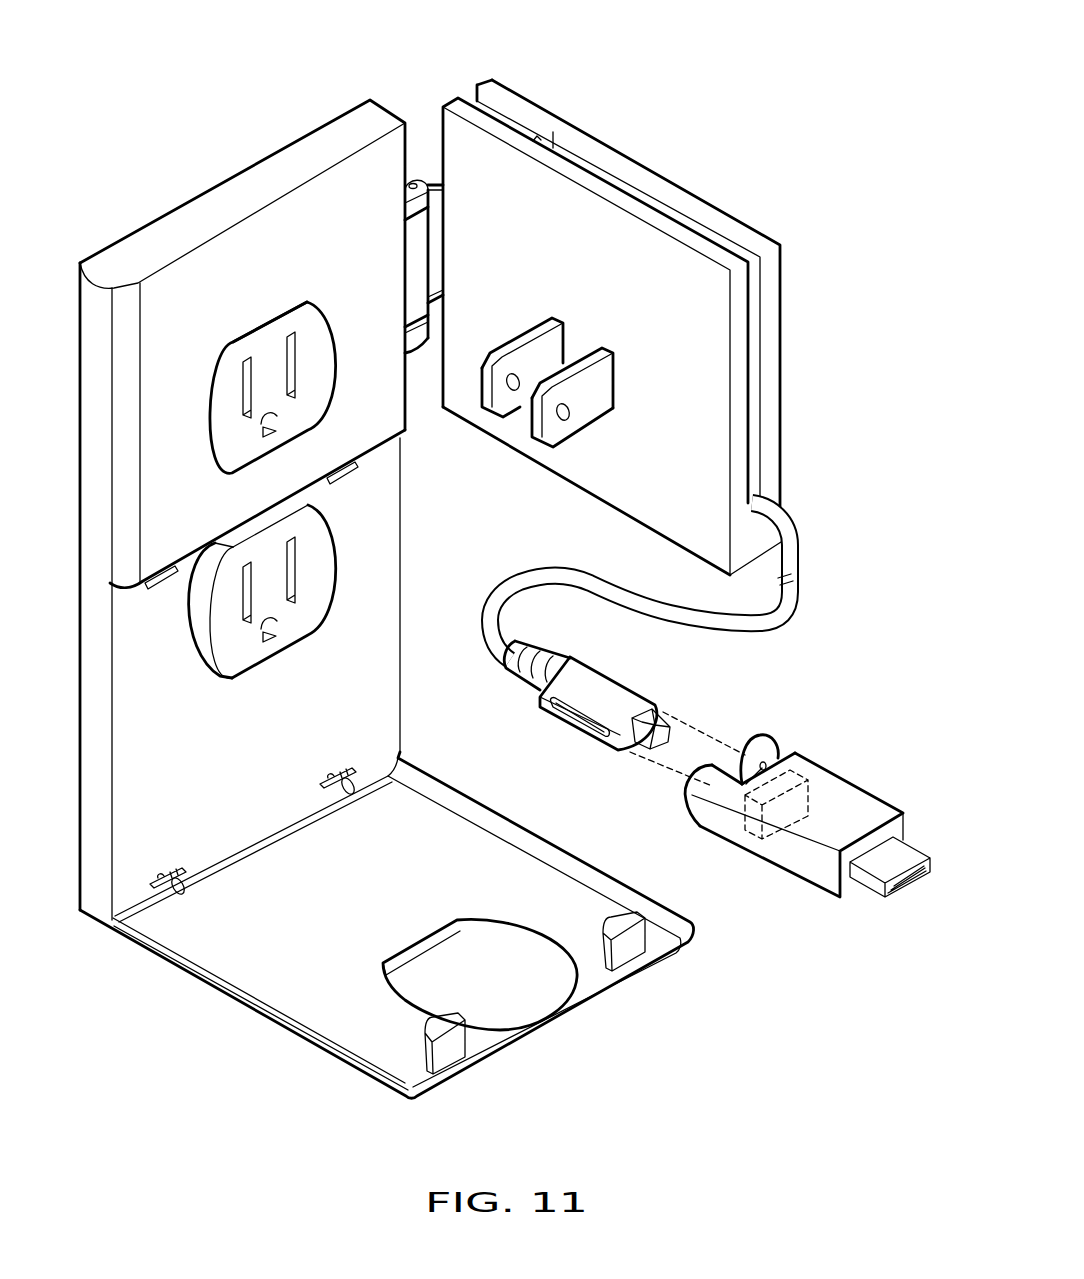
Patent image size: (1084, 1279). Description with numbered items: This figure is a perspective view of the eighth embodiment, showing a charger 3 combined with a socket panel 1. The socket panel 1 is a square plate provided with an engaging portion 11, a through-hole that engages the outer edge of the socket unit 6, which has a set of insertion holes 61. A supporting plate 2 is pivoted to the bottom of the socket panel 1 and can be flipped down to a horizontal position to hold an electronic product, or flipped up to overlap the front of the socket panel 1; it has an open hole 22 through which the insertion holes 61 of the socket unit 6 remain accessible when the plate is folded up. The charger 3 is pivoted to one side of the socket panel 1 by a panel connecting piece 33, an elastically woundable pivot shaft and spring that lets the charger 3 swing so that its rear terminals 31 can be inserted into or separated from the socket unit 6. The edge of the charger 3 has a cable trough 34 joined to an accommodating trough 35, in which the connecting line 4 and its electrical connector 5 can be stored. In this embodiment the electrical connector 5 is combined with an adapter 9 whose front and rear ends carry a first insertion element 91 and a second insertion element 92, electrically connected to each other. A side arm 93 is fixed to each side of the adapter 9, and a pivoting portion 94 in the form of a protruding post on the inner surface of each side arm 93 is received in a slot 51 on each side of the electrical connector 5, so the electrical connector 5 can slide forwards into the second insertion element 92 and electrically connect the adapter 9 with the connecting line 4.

The socket panel 1 is at (172, 212).
The engaging portion 11 is at (265, 322).
The supporting plate 2 is at (638, 974).
The open hole 22 is at (497, 1013).
The charger 3 is at (738, 222).
The terminals 31 is at (587, 390).
The panel connecting piece 33 is at (418, 246).
The cable trough 34 is at (583, 148).
The accommodating trough 35 is at (492, 82).
The connecting line 4 is at (486, 587).
The electrical connector 5 is at (604, 750).
The slot 51 is at (562, 718).
The socket unit 6 is at (218, 375).
The insertion holes 61 is at (293, 347).
The adapter 9 is at (860, 782).
The first insertion element 91 is at (910, 852).
The second insertion element 92 is at (807, 790).
The side arm 93 is at (707, 800).
The pivoting portion 94 is at (760, 765).